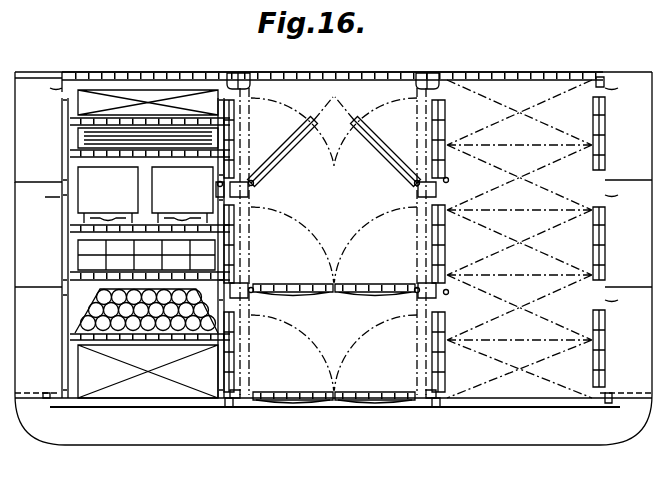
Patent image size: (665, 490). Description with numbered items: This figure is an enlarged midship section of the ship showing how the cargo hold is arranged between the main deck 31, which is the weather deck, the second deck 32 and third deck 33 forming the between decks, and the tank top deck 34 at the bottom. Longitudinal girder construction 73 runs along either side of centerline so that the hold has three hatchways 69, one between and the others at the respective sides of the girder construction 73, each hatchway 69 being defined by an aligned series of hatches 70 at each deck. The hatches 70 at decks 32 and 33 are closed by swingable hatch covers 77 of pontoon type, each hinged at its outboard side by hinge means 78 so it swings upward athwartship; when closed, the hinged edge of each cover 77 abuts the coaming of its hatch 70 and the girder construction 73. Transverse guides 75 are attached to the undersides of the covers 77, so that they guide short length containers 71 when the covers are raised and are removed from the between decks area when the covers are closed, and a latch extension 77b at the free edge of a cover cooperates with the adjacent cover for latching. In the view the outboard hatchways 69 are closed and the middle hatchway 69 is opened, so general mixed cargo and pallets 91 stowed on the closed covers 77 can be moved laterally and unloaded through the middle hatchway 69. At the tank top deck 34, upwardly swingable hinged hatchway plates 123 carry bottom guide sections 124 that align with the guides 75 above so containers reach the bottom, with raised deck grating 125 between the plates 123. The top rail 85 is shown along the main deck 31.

The main deck 31 is at (47, 72).
The second deck 32 is at (36, 182).
The third deck 33 is at (34, 287).
The tank top deck 34 is at (152, 408).
The top rail 85 is at (157, 72).
The longitudinal girder construction 73 is at (240, 73).
The hatch 70 is at (245, 76).
The short length container 71 is at (518, 95).
The hatchway 69 is at (321, 208).
The swingable hatch cover 77 is at (293, 143).
The latch extension 77b is at (334, 104).
The transverse guide 75 is at (283, 156).
The hinge means 78 is at (216, 184).
The pallet 91 is at (93, 222).
The hinged hatchway plate 123 is at (236, 352).
The bottom guide section 124 is at (280, 405).
The raised deck grating 125 is at (45, 397).